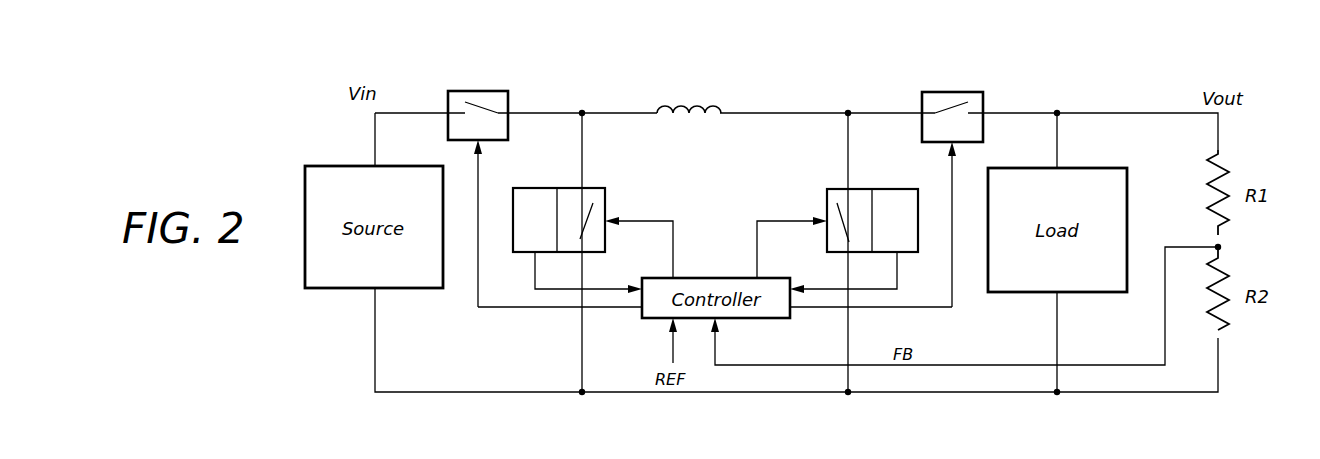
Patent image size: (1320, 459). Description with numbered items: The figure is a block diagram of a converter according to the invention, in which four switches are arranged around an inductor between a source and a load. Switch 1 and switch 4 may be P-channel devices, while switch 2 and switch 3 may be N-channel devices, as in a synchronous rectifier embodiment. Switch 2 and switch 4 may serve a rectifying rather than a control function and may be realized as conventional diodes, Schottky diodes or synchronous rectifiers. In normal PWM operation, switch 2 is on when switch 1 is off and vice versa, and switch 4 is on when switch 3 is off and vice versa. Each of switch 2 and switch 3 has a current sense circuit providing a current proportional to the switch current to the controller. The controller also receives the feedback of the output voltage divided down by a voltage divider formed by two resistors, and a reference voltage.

The switch 1 is at (478, 103).
The switch 2 is at (559, 206).
The switch 3 is at (872, 206).
The switch 4 is at (952, 103).